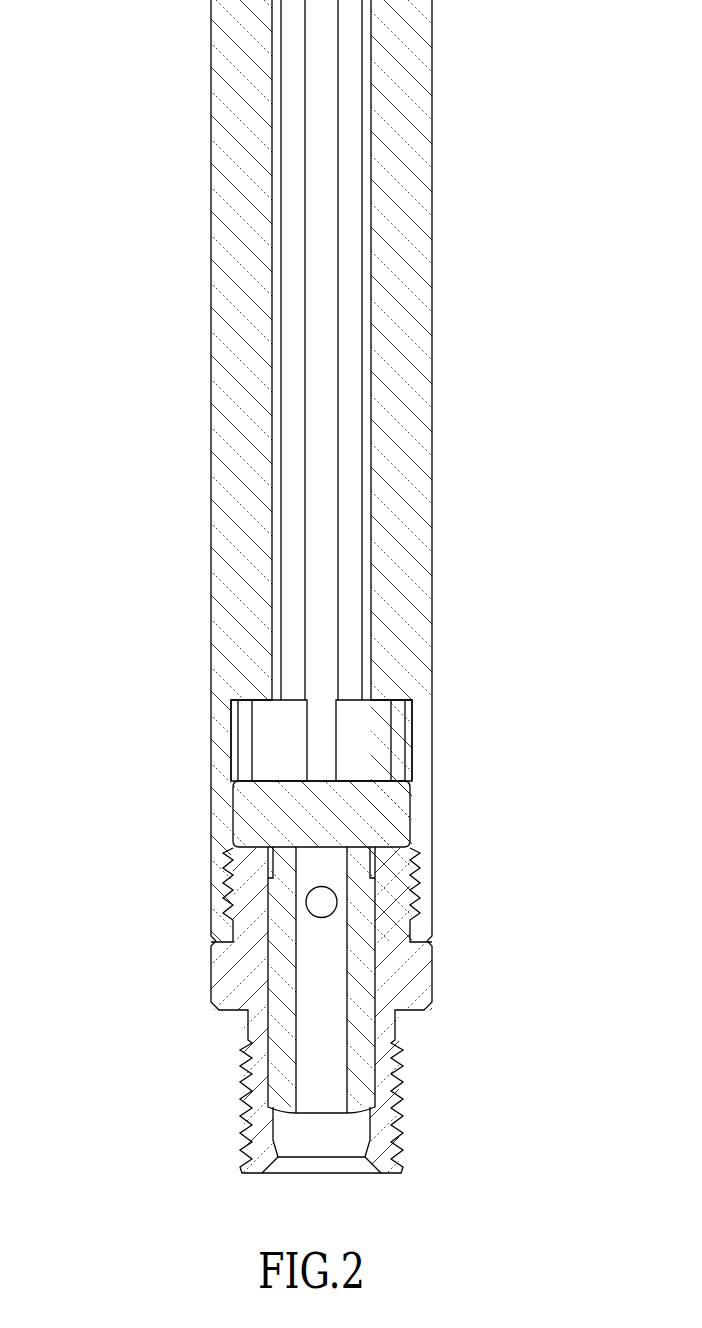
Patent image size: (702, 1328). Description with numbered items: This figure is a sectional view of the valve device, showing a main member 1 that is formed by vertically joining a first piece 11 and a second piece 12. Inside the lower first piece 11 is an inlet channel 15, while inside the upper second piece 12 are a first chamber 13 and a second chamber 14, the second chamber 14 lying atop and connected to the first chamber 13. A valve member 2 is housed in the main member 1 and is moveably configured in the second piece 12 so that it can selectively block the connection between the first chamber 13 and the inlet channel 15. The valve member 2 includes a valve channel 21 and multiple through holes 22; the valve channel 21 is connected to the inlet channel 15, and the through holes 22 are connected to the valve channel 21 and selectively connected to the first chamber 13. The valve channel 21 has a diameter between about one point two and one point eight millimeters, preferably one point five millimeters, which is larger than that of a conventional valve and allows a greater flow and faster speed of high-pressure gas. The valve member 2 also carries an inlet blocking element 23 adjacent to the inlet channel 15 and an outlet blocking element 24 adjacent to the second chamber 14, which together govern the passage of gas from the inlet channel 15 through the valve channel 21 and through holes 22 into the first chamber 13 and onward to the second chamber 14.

The main member 1 is at (92, 723).
The first piece 11 is at (211, 967).
The second piece 12 is at (211, 722).
The first chamber 13 is at (366, 724).
The second chamber 14 is at (336, 616).
The inlet channel 15 is at (353, 1146).
The valve member 2 is at (370, 820).
The valve channel 21 is at (320, 988).
The through holes 22 is at (334, 914).
The inlet blocking element 23 is at (318, 848).
The outlet blocking element 24 is at (352, 780).